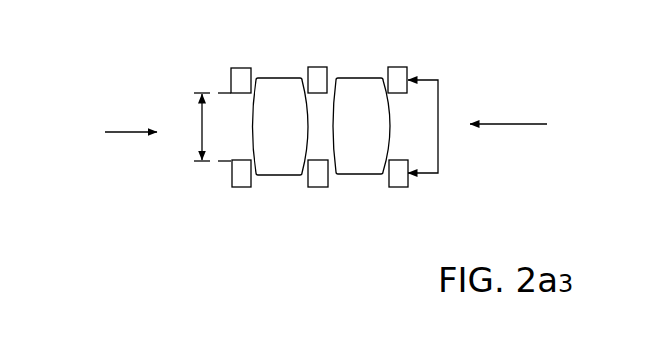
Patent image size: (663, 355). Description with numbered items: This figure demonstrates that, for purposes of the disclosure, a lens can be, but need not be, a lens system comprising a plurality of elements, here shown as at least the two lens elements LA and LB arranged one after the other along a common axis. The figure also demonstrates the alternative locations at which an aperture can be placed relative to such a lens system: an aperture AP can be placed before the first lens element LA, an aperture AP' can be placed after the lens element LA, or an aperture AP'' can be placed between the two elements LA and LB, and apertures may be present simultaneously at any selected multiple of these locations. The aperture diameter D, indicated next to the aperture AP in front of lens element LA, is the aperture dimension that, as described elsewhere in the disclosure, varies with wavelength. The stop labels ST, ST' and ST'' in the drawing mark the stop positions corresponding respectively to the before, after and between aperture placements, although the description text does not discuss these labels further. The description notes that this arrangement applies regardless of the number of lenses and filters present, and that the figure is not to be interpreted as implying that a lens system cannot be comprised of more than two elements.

The first stop / aperture stop ST is at (194, 136).
The second stop ST' is at (280, 133).
The third stop ST'' is at (450, 123).
The aperture diameter D is at (212, 127).
The lens element LA is at (281, 126).
The lens element LB is at (361, 126).
The aperture AP is at (112, 131).
The aperture AP' is at (385, 216).
The aperture AP'' is at (501, 126).